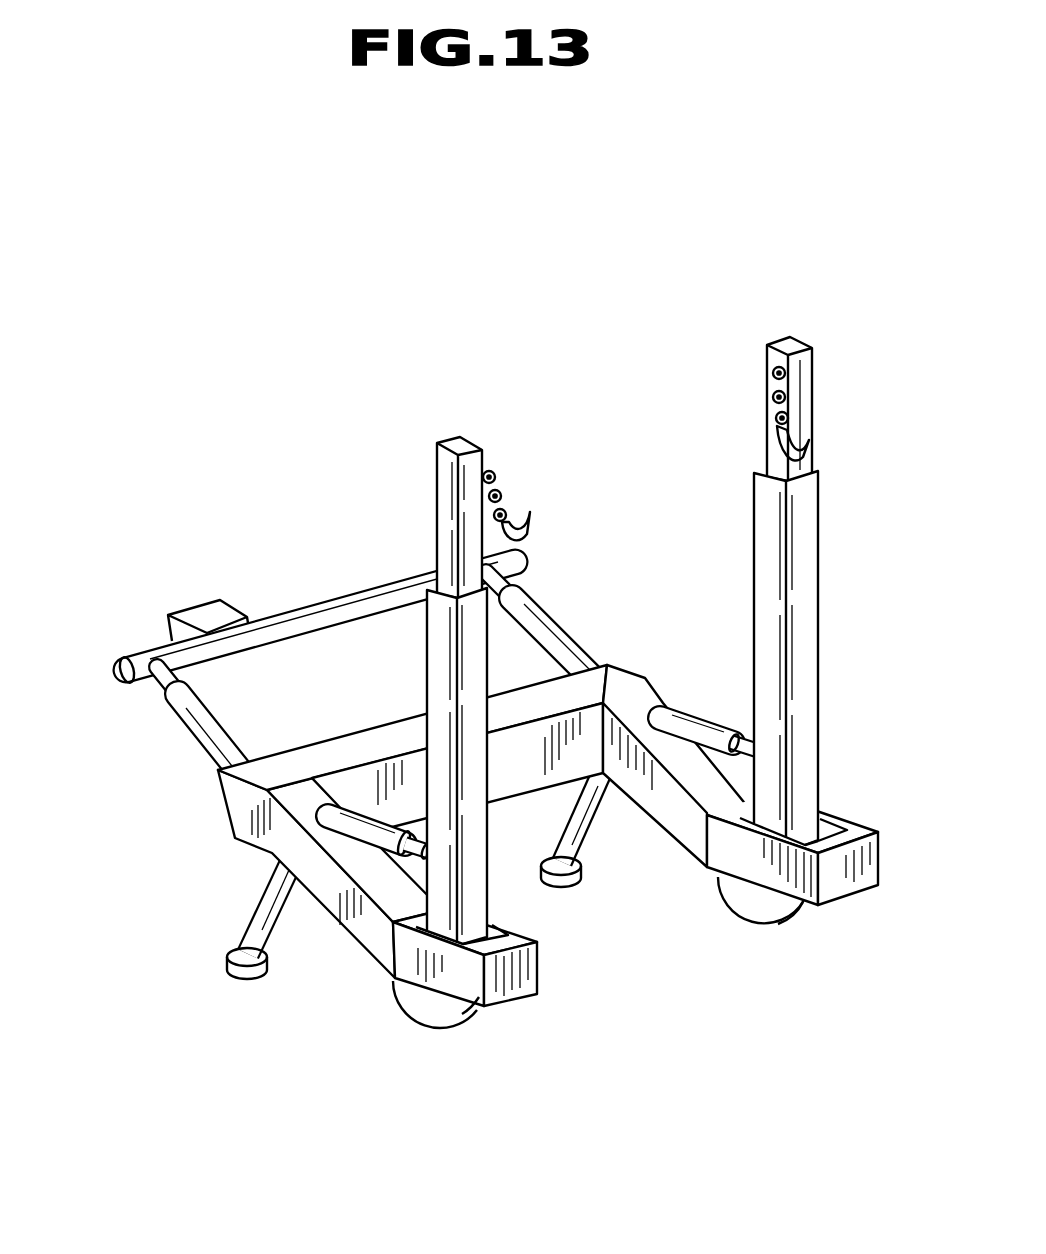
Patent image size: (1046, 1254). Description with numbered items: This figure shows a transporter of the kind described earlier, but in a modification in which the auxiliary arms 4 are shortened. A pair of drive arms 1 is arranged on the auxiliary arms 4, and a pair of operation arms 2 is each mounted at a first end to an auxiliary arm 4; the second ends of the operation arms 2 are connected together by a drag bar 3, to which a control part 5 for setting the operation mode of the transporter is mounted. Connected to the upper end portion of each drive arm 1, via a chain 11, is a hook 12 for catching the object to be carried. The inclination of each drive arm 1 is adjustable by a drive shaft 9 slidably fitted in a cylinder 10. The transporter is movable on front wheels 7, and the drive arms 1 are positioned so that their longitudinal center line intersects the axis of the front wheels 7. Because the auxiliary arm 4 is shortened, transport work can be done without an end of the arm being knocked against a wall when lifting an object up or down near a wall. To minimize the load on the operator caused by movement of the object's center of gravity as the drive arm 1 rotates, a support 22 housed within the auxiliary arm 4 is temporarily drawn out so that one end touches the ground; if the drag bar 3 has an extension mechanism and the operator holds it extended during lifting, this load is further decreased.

The drive arm 1 is at (488, 704).
The operation arm 2 is at (200, 731).
The drag bar 3 is at (321, 610).
The auxiliary arm 4 is at (437, 975).
The control part 5 is at (191, 616).
The front wheel 7 is at (445, 1013).
The drive shaft 9 is at (423, 852).
The cylinder 10 is at (325, 818).
The chain 11 is at (497, 476).
The hook 12 is at (812, 458).
The support 22 is at (272, 913).